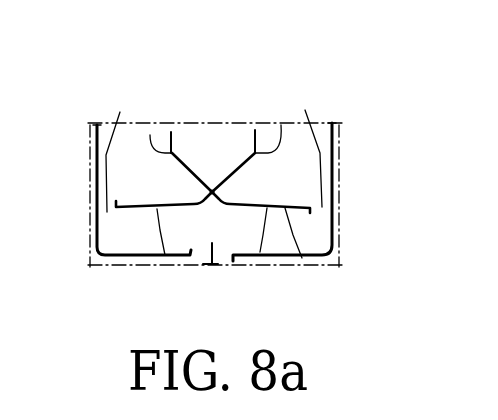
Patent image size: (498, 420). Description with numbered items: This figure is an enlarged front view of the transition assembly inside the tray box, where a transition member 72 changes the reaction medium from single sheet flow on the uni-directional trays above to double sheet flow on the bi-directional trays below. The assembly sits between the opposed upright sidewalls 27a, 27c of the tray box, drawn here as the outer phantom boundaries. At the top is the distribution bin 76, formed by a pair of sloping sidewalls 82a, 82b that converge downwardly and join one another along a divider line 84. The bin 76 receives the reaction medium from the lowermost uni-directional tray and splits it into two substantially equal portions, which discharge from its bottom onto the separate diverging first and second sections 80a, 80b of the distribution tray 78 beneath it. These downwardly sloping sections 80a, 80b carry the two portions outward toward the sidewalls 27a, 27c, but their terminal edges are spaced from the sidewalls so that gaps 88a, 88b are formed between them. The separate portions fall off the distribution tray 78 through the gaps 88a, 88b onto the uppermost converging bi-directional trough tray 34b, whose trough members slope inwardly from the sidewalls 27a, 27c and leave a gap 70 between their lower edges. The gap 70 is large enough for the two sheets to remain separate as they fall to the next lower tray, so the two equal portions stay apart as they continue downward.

The upright sidewall 27a is at (92, 135).
The upright sidewall 27c is at (338, 141).
The bi-directional trough tray 34b is at (126, 257).
The gap 70 is at (214, 268).
The transition member 72 is at (150, 135).
The distribution bin 76 is at (281, 125).
The distribution tray 78 is at (302, 258).
The first section of distribution tray 80a is at (165, 255).
The second section of distribution tray 80b is at (260, 252).
The sloping sidewall 82a is at (190, 170).
The sloping sidewall 82b is at (227, 178).
The divider line 84 is at (212, 189).
The gap 88a is at (120, 112).
The gap 88b is at (305, 110).